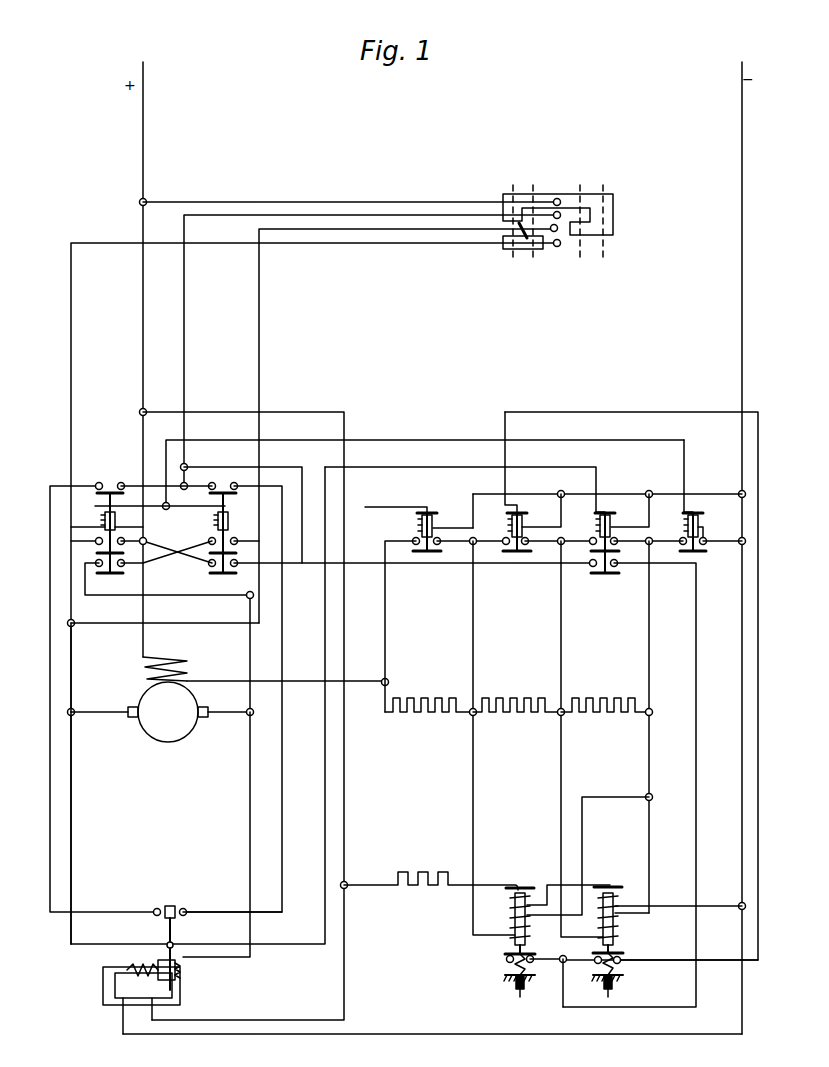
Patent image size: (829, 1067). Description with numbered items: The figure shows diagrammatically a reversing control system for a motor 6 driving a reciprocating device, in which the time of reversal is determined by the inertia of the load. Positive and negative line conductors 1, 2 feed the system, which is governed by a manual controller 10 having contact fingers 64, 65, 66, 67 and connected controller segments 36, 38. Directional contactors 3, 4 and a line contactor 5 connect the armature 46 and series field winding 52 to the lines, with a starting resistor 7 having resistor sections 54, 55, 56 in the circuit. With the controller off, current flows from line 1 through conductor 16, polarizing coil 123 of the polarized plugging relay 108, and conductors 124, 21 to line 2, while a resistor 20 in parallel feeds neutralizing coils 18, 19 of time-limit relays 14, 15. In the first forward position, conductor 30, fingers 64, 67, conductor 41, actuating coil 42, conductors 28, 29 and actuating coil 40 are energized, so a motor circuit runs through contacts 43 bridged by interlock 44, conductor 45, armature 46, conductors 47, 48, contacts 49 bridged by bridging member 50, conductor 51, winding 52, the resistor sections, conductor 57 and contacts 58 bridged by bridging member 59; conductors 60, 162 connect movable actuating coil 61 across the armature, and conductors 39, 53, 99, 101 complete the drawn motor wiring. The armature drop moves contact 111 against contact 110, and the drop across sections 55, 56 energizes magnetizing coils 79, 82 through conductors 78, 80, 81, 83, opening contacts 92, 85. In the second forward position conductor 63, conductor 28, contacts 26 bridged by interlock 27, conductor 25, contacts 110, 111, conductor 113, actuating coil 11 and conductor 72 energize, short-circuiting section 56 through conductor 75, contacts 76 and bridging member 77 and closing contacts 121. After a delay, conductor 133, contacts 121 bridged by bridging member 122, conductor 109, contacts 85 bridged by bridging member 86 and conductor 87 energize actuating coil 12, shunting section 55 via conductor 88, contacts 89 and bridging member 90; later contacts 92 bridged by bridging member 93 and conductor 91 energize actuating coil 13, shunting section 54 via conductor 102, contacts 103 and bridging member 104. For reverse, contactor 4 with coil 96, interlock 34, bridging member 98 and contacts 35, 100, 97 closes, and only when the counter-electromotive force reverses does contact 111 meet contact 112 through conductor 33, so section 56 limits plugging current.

The positive line conductor 1 is at (143, 134).
The negative line conductor 2 is at (742, 134).
The directional contactor 3 is at (107, 522).
The directional contactor 4 is at (239, 522).
The line contactor 5 is at (697, 542).
The motor 6 is at (160, 711).
The starting resistor 7 is at (519, 691).
The manual controller 10 is at (576, 211).
The actuating coil 11 is at (596, 530).
The actuating coil 12 is at (523, 522).
The actuating coil 13 is at (418, 522).
The time-limit relay 14 is at (563, 897).
The time-limit relay 15 is at (624, 924).
The conductor 16 is at (324, 412).
The neutralizing coil 18 is at (508, 900).
The neutralizing coil 19 is at (622, 889).
The resistor 20 is at (406, 872).
The conductor 21 is at (742, 891).
The conductor 25 is at (50, 826).
The contacts 26 is at (94, 494).
The interlock 27 is at (109, 484).
The conductor 28 is at (162, 488).
The conductor 29 is at (381, 442).
The conductor 30 is at (256, 202).
The conductor 33 is at (282, 660).
The interlock 34 is at (232, 493).
The contacts 35 is at (224, 484).
The controller segment 36 is at (613, 206).
The controller segment 38 is at (525, 250).
The conductor 39 is at (259, 340).
The actuating coil 40 is at (701, 526).
The conductor 41 is at (408, 244).
The actuating coil 42 is at (115, 523).
The contacts 43 is at (131, 536).
The interlock 44 is at (120, 554).
The conductor 45 is at (71, 652).
The armature 46 is at (168, 712).
The conductor 47 is at (250, 660).
The conductor 48 is at (182, 586).
The contacts 49 is at (98, 544).
The bridging member 50 is at (103, 576).
The conductor 51 is at (142, 612).
The series field winding 52 is at (170, 666).
The conductor 53 is at (294, 680).
The resistor section 54 is at (417, 714).
The resistor section 55 is at (519, 716).
The plugging resistor section 56 is at (587, 714).
The conductor 57 is at (649, 653).
The contacts 58 is at (707, 539).
The bridging member 59 is at (699, 554).
The conductor 60 is at (71, 824).
The movable actuating coil 61 is at (182, 972).
The conductor 63 is at (184, 340).
The contact finger 64 is at (567, 202).
The contact finger 65 is at (567, 216).
The contact finger 66 is at (545, 228).
The contact finger 67 is at (567, 247).
The conductor 72 is at (482, 494).
The conductor 75 is at (558, 562).
The contacts 76 is at (611, 540).
The bridging member 77 is at (620, 551).
The conductor 78 is at (561, 773).
The magnetizing coil 79 is at (617, 924).
The conductor 80 is at (649, 822).
The conductor 81 is at (473, 773).
The magnetizing coil 82 is at (527, 932).
The conductor 83 is at (582, 820).
The contacts 85 is at (622, 964).
The bridging member 86 is at (621, 954).
The conductor 87 is at (504, 469).
The conductor 88 is at (481, 556).
The contacts 89 is at (506, 534).
The bridging member 90 is at (516, 560).
The conductor 91 is at (356, 820).
The contacts 92 is at (531, 958).
The bridging member 93 is at (507, 952).
The actuating coil 96 is at (229, 523).
The contacts 97 is at (234, 554).
The bridging member 98 is at (206, 576).
The conductor 99 is at (270, 576).
The contacts 100 is at (237, 540).
The conductor 101 is at (166, 551).
The conductor 102 is at (385, 655).
The contacts 103 is at (441, 549).
The bridging member 104 is at (434, 554).
The polarized plugging relay 108 is at (180, 945).
The conductor 109 is at (696, 653).
The contact 110 is at (158, 906).
The contact 111 is at (172, 906).
The contact 112 is at (186, 908).
The conductor 113 is at (580, 465).
The contacts 121 is at (592, 566).
The bridging member 122 is at (603, 574).
The polarizing coil 123 is at (122, 970).
The conductor 124 is at (506, 1032).
The conductor 133 is at (274, 470).
The conductor 162 is at (248, 826).